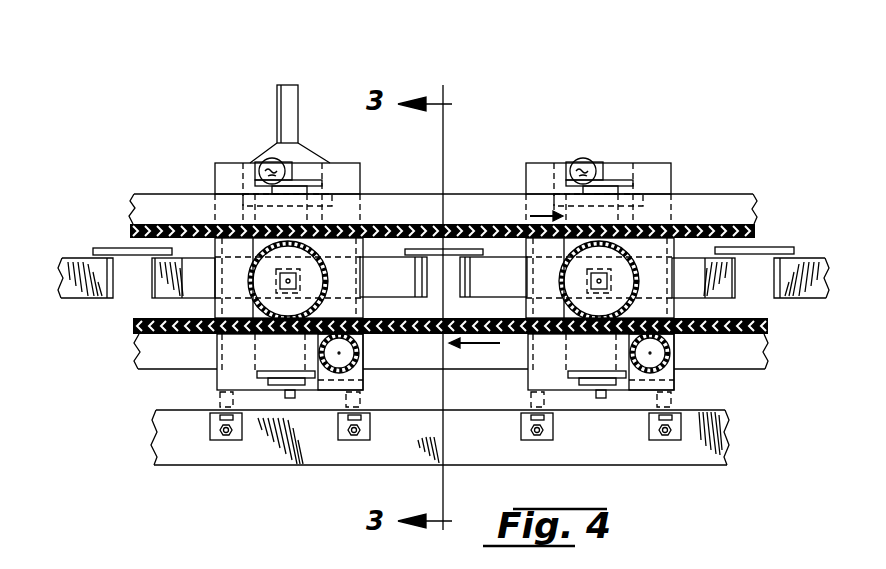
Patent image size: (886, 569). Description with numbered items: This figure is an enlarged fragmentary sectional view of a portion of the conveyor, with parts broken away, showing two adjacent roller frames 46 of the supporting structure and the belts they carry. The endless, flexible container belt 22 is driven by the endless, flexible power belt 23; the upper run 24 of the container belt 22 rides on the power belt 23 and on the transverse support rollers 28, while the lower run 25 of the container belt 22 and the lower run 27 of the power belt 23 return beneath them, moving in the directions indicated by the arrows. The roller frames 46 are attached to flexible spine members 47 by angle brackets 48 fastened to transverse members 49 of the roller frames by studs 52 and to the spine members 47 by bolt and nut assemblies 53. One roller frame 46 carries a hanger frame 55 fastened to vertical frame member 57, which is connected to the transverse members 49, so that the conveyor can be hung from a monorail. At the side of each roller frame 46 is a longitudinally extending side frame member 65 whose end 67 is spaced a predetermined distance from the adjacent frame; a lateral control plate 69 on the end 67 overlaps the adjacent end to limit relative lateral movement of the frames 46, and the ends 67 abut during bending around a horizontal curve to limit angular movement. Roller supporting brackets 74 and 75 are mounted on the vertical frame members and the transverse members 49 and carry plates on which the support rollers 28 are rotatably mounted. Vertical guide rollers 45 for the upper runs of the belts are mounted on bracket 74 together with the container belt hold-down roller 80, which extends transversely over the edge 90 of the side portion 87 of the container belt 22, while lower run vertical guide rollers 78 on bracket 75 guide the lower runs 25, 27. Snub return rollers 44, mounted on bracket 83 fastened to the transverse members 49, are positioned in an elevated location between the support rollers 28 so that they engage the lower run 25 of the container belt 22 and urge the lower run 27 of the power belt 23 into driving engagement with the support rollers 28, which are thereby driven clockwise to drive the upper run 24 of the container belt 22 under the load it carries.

The container belt 22 is at (150, 200).
The power belt 23 is at (420, 225).
The upper run of the container belt 24 is at (387, 226).
The lower run of the container belt 25 is at (136, 350).
The lower run of the power belt 27 is at (134, 324).
The support rollers 28 is at (330, 286).
The snub return rollers 44 is at (361, 354).
The vertical guide rollers 45 is at (292, 190).
The roller frames 46 is at (234, 165).
The flexible spine members 47 is at (723, 462).
The angle brackets 48 is at (213, 442).
The transverse members 49 is at (218, 400).
The studs 52 is at (212, 428).
The bolt and nut assemblies 53 is at (227, 442).
The hanger frame 55 is at (286, 88).
The vertical frame member 57 is at (310, 182).
The side frame member 65 is at (64, 270).
The end of side frame member 67 is at (113, 270).
The lateral control plate 69 is at (117, 249).
The roller supporting bracket 74 is at (324, 188).
The roller supporting bracket 75 is at (291, 399).
The lower run vertical guide rollers 78 is at (262, 375).
The container belt hold-down roller 80 is at (267, 160).
The bracket 83 is at (364, 380).
The side portion of the container belt 87 is at (688, 206).
The edge of the container belt 90 is at (201, 262).